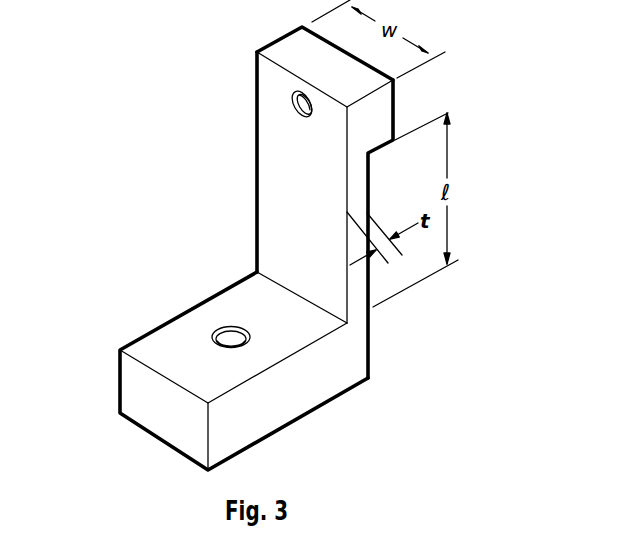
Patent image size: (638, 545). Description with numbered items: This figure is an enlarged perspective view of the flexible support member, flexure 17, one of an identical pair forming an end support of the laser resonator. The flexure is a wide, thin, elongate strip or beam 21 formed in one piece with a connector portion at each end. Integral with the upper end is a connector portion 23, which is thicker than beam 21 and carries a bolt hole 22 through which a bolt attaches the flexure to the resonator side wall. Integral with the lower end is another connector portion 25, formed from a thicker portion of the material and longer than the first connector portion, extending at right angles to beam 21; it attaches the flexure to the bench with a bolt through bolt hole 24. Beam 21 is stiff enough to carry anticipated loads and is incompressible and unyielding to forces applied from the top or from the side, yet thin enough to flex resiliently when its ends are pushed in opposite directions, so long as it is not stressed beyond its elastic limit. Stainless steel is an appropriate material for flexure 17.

The flexure 17 is at (172, 103).
The beam 21 is at (256, 222).
The bolt hole 22 is at (290, 97).
The connector portion 23 is at (280, 40).
The bolt hole 24 is at (218, 328).
The connector portion 25 is at (148, 333).